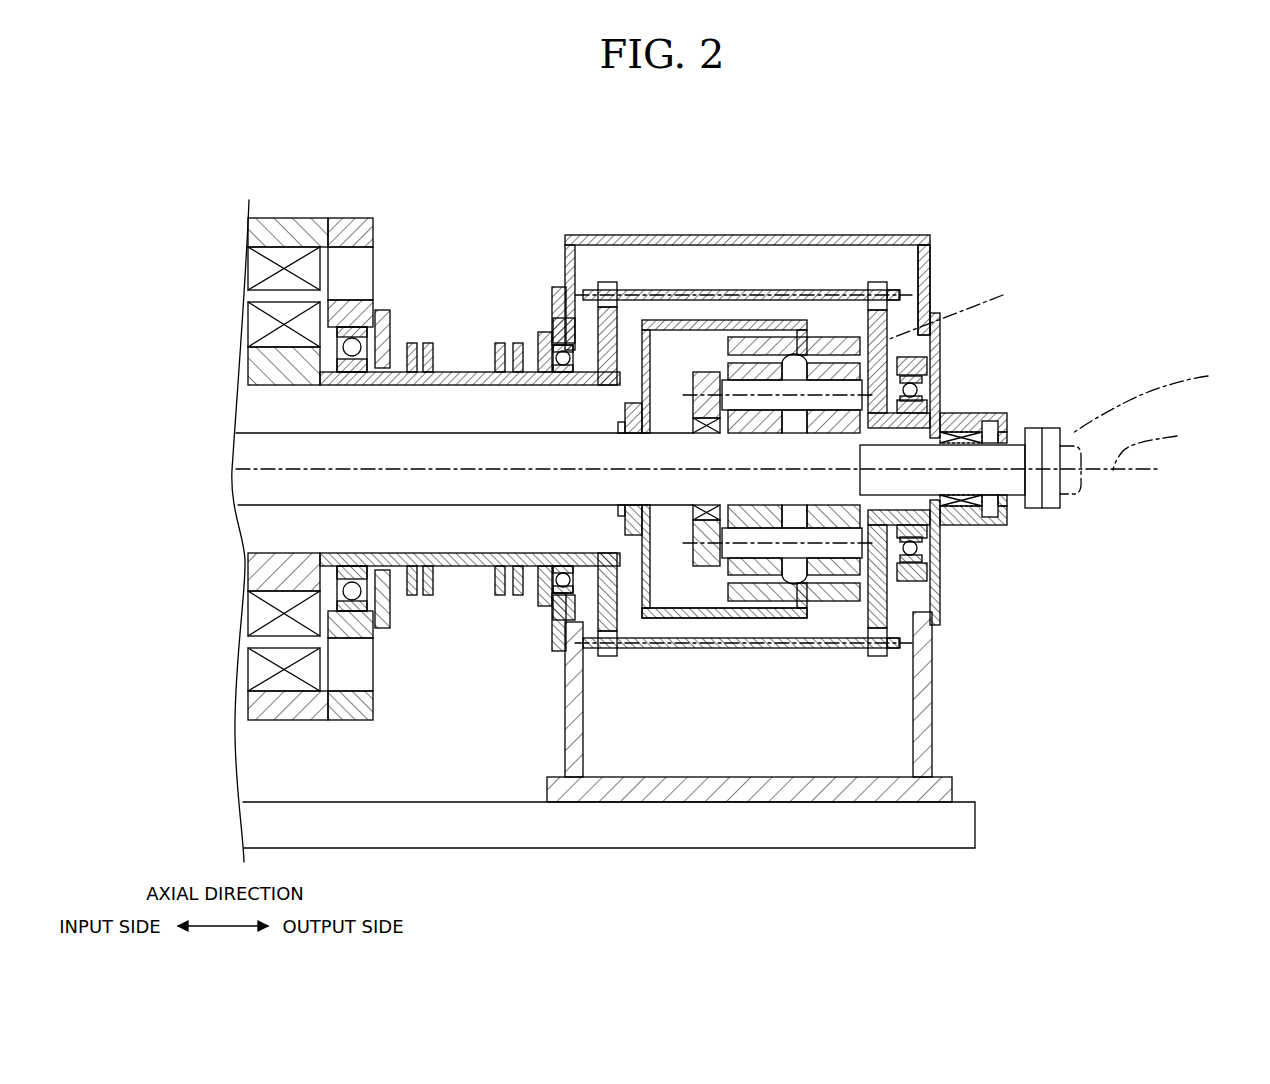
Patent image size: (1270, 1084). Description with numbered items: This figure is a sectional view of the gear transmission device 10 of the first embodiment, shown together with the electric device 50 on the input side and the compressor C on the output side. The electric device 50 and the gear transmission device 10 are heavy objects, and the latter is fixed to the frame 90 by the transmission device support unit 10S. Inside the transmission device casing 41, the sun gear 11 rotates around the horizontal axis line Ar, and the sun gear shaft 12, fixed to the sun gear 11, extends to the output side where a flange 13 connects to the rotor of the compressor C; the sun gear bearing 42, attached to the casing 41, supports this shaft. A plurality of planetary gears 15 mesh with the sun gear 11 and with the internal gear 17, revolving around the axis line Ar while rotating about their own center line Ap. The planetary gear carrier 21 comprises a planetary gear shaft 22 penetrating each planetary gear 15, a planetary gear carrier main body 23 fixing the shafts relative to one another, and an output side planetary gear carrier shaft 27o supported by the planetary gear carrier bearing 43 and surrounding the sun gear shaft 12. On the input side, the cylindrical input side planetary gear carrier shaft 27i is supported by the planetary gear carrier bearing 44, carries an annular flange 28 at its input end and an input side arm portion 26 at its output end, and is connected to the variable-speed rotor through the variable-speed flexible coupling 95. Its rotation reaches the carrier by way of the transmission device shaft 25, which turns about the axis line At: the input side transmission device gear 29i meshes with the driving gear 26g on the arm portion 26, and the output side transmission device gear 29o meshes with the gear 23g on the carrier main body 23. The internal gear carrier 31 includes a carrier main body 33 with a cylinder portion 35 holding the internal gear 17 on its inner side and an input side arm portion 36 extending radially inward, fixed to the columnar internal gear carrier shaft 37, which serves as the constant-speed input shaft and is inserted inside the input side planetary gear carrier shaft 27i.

The gear transmission device 10 is at (935, 229).
The transmission device support unit 10S is at (932, 736).
The sun gear 11 is at (946, 512).
The sun gear shaft 12 is at (1033, 508).
The flange 13 is at (1022, 493).
The planetary gear 15 is at (738, 362).
The internal gear 17 is at (832, 345).
The planetary gear carrier 21 is at (897, 321).
The planetary gear shaft 22 is at (762, 385).
The planetary gear carrier main body 23 is at (926, 300).
The gear 23g is at (884, 302).
The transmission device shaft 25 is at (782, 290).
The input side arm portion 26 is at (613, 322).
The driving gear 26g is at (618, 292).
The input side planetary gear carrier shaft 27i is at (556, 330).
The output side planetary gear carrier shaft 27o is at (908, 373).
The annular flange 28 is at (540, 343).
The input side transmission device gear 29i is at (603, 290).
The output side transmission device gear 29o is at (877, 290).
The internal gear carrier 31 is at (636, 578).
The carrier main body 33 is at (613, 905).
The cylinder portion 35 is at (703, 618).
The input side arm portion 36 is at (632, 540).
The internal gear carrier shaft 37 is at (584, 562).
The transmission device casing 41 is at (558, 236).
The sun gear bearing 42 is at (968, 506).
The planetary gear carrier bearing 43 is at (918, 391).
The planetary gear carrier bearing 44 is at (548, 330).
The electric device 50 is at (299, 205).
The frame 90 is at (975, 823).
The variable-speed flexible coupling 95 is at (475, 372).
The center line Ap is at (967, 307).
The axis line Ar is at (1163, 444).
The axis line At is at (808, 395).
The compressor C is at (1153, 398).